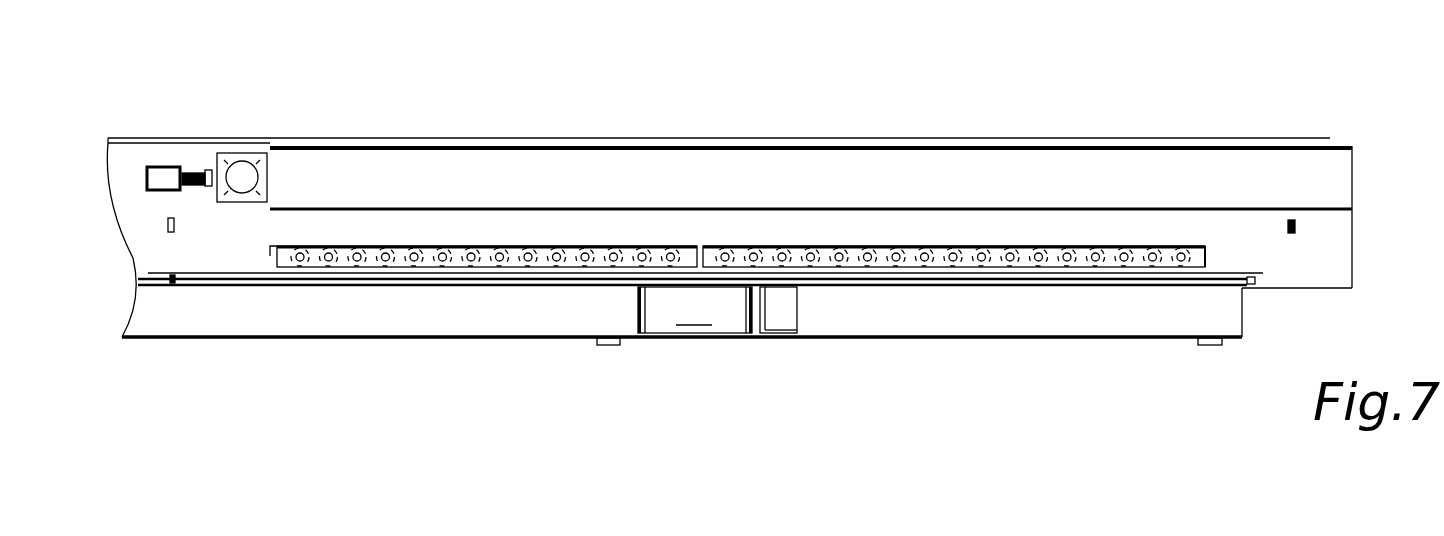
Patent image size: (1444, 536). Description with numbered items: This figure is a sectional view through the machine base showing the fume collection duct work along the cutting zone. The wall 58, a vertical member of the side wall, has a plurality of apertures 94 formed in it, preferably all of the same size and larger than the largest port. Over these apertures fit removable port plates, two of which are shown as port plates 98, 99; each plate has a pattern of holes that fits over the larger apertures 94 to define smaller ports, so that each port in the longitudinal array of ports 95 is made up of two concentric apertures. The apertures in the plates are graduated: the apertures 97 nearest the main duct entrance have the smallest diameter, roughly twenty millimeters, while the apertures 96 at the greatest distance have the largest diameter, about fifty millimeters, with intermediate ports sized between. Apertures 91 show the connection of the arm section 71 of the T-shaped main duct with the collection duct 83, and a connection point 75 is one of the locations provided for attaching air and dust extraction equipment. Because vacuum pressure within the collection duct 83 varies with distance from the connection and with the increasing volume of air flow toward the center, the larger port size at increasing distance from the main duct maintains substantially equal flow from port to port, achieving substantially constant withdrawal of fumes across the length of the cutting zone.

The wall 58 is at (140, 210).
The apertures 94 is at (300, 254).
The apertures 96 is at (300, 266).
The apertures 97 is at (725, 252).
The port plate 98 is at (462, 268).
The port plate 99 is at (1082, 267).
The collection duct 83 is at (1207, 257).
The apertures 91 is at (668, 290).
The arm section 71 is at (695, 311).
The connection point 75 is at (738, 290).
The array of ports 95 is at (1197, 390).